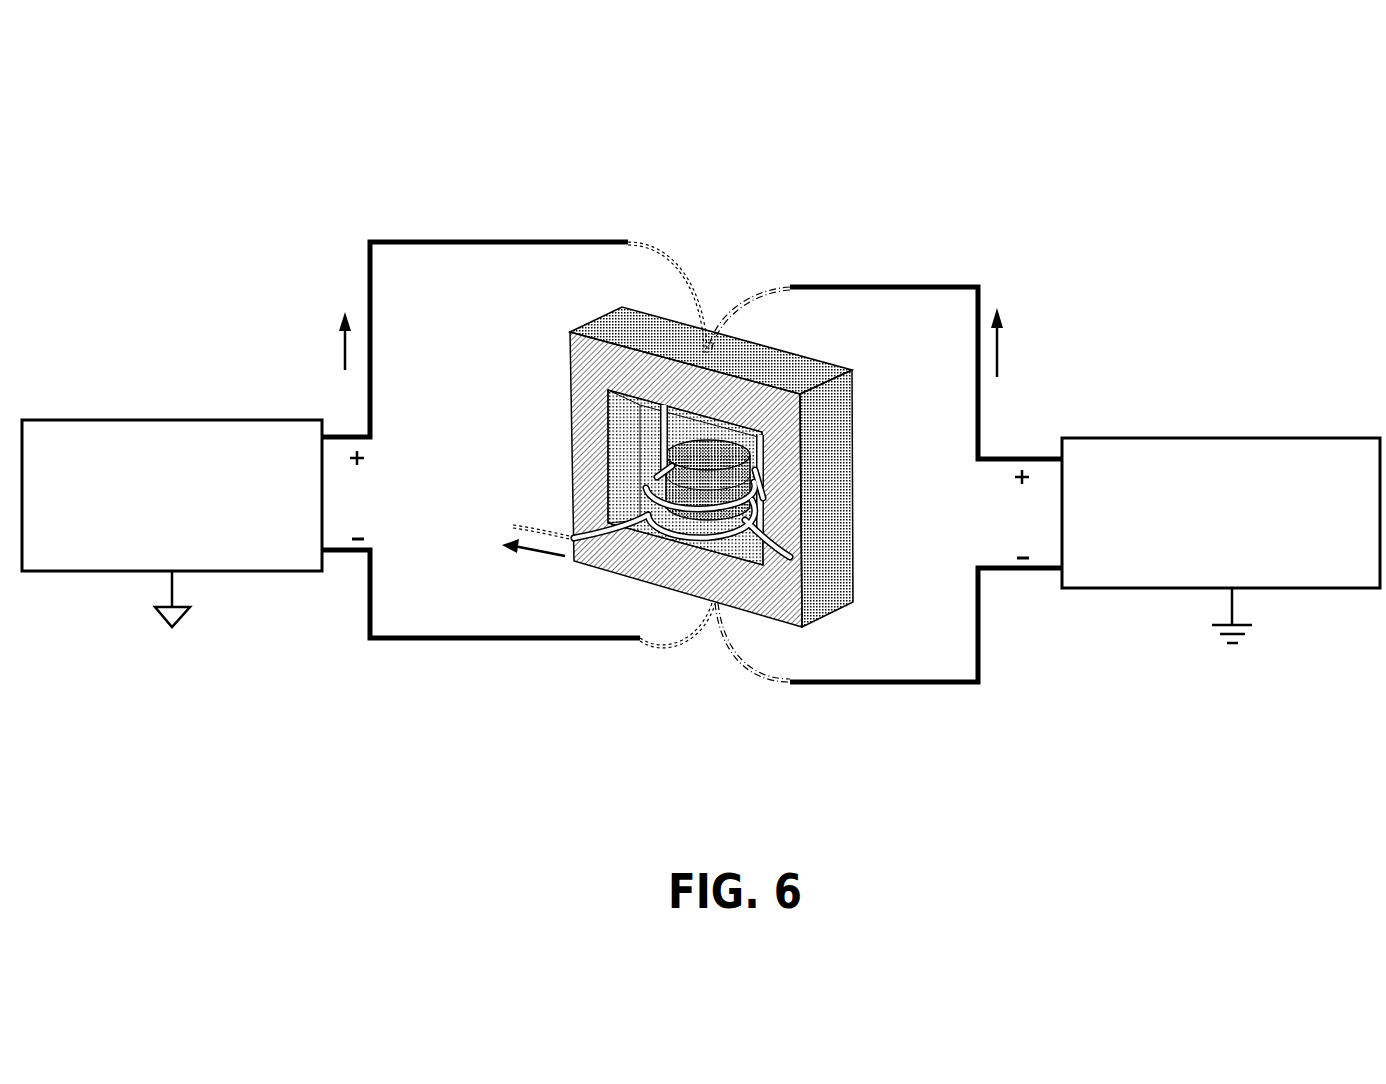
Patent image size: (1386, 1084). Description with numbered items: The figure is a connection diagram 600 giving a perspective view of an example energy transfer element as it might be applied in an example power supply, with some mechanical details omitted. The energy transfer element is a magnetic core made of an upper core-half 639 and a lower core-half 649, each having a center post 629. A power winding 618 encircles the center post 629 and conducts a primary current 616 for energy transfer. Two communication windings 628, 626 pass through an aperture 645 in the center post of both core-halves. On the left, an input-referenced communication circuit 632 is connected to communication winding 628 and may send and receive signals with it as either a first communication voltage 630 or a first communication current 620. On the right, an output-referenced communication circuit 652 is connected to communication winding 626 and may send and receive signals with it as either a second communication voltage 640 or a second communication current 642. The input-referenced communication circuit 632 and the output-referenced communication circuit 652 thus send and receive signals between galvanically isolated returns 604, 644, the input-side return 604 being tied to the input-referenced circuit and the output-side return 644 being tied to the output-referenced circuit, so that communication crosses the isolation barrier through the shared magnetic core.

The connection diagram 600 is at (353, 110).
The galvanically isolated return 604 is at (158, 622).
The current IP1 616 is at (508, 563).
The power winding 618 is at (533, 525).
The current IC1 620 is at (329, 327).
The communication winding 626 is at (767, 286).
The communication winding 628 is at (641, 260).
The center post 629 is at (728, 453).
The voltage VC1 630 is at (373, 479).
The input-referenced communication circuit 632 is at (133, 411).
The upper core-half 639 is at (846, 466).
The voltage VC2 640 is at (990, 503).
The current IC2 642 is at (1022, 327).
The galvanically isolated return 644 is at (1212, 633).
The aperture 645 is at (716, 465).
The lower core-half 649 is at (849, 545).
The output-referenced communication circuit 652 is at (1300, 428).